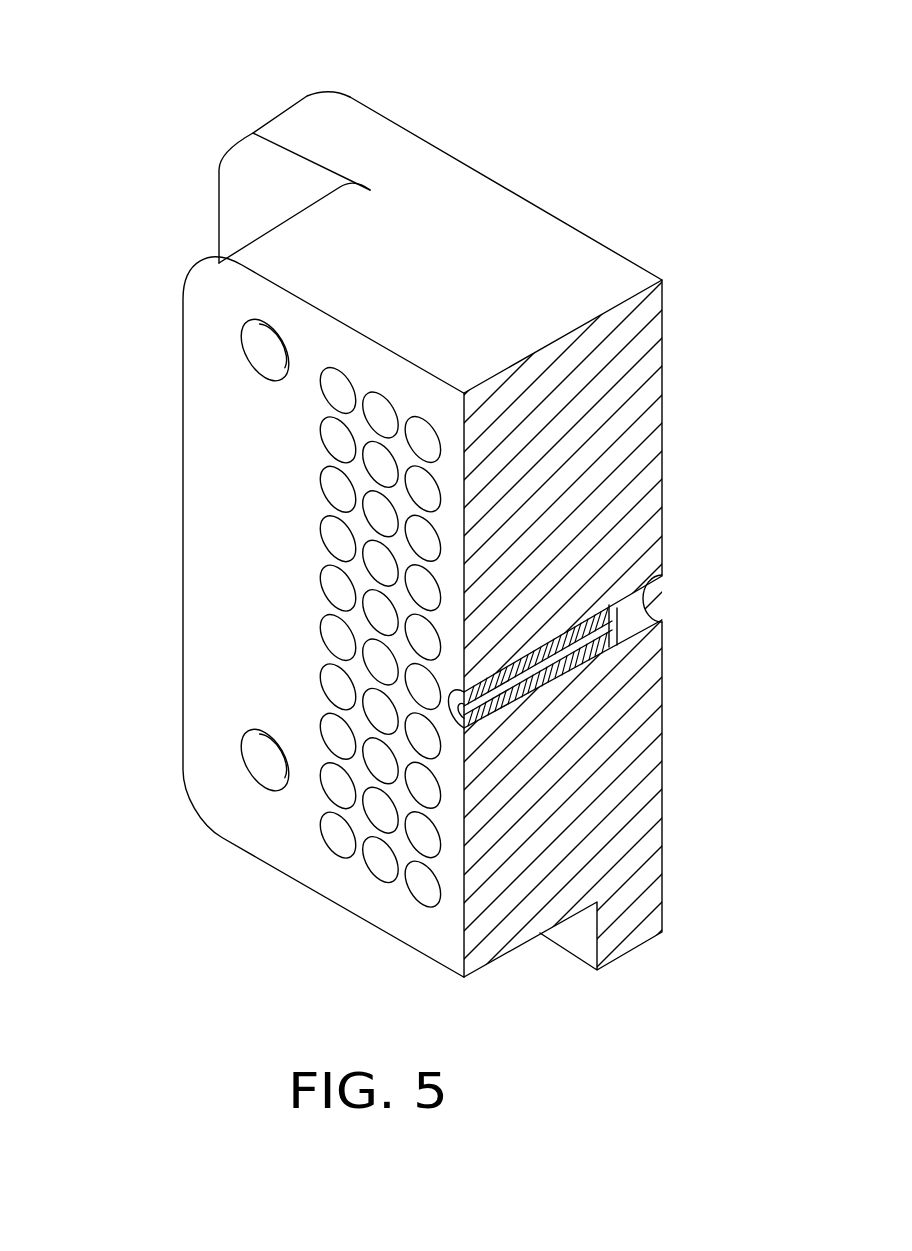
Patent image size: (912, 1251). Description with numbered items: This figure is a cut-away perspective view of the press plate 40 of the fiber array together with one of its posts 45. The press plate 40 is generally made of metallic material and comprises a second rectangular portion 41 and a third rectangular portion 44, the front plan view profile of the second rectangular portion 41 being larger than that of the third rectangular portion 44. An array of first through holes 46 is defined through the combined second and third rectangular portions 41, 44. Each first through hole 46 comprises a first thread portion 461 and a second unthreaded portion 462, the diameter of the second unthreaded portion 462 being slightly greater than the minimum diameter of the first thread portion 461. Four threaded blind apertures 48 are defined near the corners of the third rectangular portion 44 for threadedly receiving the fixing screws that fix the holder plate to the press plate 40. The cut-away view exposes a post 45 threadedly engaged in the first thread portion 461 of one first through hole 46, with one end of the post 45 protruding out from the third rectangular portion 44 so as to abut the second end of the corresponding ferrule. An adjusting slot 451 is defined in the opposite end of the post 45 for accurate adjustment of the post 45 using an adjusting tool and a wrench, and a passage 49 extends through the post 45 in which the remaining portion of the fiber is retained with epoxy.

The press plate 40 is at (195, 108).
The second rectangular portion 41 is at (255, 213).
The third rectangular portion 44 is at (305, 273).
The post 45 is at (533, 690).
The first through hole 46 is at (335, 540).
The threaded blind aperture 48 is at (260, 357).
The passage 49 is at (558, 663).
The adjusting slot 451 is at (623, 643).
The first thread portion 461 is at (484, 703).
The second unthreaded portion 462 is at (643, 613).